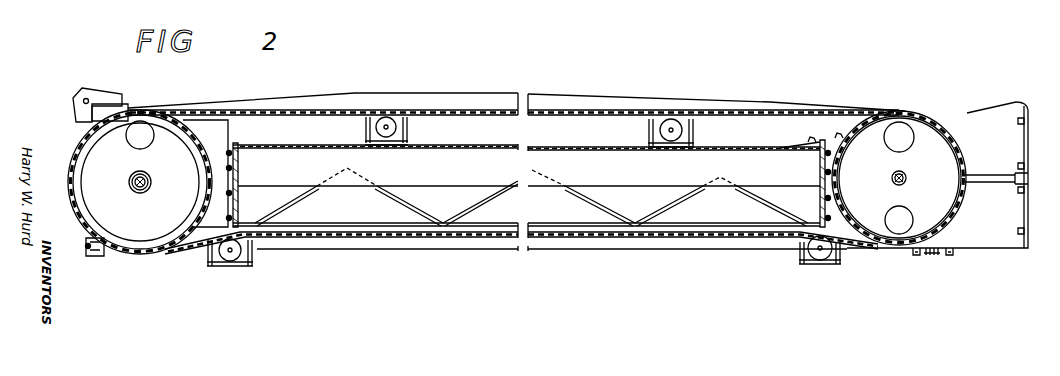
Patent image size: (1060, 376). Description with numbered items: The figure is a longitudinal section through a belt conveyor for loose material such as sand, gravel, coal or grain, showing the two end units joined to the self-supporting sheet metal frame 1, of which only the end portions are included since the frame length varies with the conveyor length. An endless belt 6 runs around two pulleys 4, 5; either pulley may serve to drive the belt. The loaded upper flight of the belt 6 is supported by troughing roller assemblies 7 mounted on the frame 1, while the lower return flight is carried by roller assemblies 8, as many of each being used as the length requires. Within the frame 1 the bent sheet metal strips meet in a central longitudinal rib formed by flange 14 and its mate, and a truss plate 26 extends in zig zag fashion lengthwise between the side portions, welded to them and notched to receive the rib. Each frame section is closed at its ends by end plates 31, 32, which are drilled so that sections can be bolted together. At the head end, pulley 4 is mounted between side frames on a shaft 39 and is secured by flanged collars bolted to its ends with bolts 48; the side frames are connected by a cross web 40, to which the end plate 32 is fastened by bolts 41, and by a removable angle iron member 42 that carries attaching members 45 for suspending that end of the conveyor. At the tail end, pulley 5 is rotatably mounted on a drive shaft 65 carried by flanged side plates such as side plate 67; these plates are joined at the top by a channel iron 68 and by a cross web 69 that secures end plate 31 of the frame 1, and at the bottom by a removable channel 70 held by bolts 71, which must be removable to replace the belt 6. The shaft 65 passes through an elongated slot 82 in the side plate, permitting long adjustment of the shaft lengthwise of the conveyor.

The sheet metal frame 1 is at (470, 145).
The pulley 4 is at (97, 142).
The pulley 5 is at (922, 116).
The endless belt 6 is at (464, 238).
The troughing roller assemblies 7 is at (409, 128).
The roller assemblies 8 is at (254, 262).
The flange 14 is at (439, 182).
The truss plate 26 is at (396, 198).
The end plate 31 is at (819, 176).
The end plate 32 is at (240, 162).
The shaft 39 is at (129, 181).
The cross web 40 is at (230, 129).
The bolts 41 is at (227, 152).
The angle iron member 42 is at (114, 104).
The attaching members 45 is at (80, 96).
The bolts 48 is at (88, 256).
The drive shaft 65 is at (907, 179).
The side plate 67 is at (988, 247).
The channel iron 68 is at (812, 140).
The cross web 69 is at (826, 199).
The removable channel 70 is at (934, 255).
The bolts 71 is at (917, 254).
The elongated slot 82 is at (990, 183).